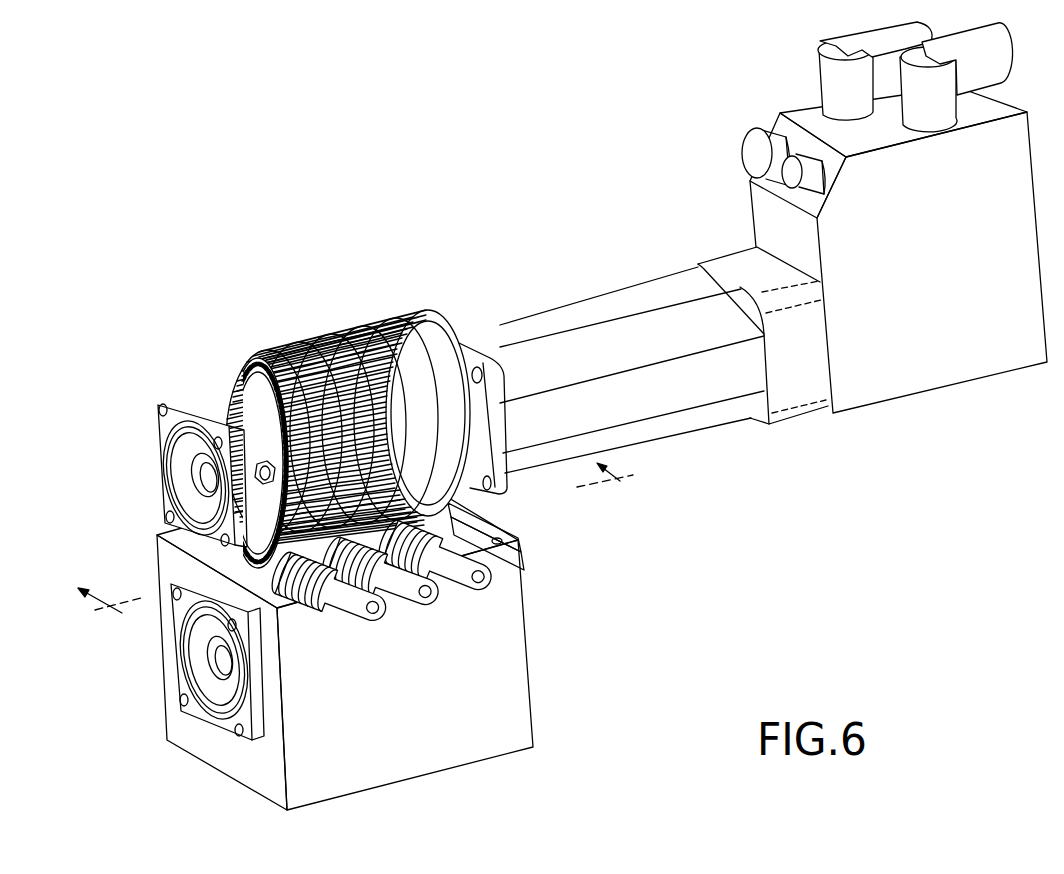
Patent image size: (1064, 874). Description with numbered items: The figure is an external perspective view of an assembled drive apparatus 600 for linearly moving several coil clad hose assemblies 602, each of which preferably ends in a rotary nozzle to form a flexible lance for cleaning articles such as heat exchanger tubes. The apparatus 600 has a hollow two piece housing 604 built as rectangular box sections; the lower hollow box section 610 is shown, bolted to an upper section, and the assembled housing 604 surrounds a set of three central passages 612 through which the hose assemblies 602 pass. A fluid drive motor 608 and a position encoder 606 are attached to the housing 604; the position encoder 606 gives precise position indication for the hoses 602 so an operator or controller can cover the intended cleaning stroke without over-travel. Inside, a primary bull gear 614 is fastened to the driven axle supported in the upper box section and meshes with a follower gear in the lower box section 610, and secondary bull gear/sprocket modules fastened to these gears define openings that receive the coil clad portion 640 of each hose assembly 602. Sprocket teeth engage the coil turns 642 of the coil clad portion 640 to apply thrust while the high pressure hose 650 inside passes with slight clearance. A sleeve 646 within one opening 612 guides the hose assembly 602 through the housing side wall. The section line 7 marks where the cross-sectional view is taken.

The apparatus 600 is at (561, 416).
The coil clad hose assembly 602 is at (542, 536).
The housing 604 is at (391, 638).
The position encoder 606 is at (933, 391).
The fluid drive motor 608 is at (663, 440).
The lower hollow box section 610 is at (532, 723).
The central passage 612 is at (336, 617).
The primary bull gear 614 is at (421, 313).
The coil clad portion 640 is at (463, 510).
The coil turn 642 is at (463, 527).
The sleeve 646 is at (396, 610).
The high pressure hose 650 is at (483, 580).
The section line 7- 7 is at (362, 546).